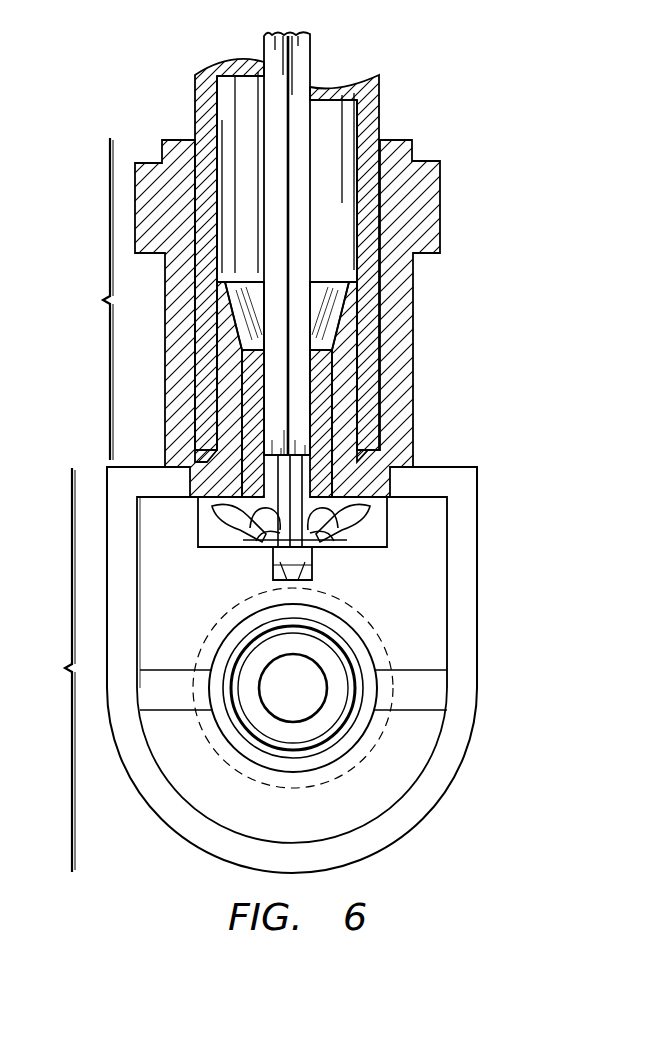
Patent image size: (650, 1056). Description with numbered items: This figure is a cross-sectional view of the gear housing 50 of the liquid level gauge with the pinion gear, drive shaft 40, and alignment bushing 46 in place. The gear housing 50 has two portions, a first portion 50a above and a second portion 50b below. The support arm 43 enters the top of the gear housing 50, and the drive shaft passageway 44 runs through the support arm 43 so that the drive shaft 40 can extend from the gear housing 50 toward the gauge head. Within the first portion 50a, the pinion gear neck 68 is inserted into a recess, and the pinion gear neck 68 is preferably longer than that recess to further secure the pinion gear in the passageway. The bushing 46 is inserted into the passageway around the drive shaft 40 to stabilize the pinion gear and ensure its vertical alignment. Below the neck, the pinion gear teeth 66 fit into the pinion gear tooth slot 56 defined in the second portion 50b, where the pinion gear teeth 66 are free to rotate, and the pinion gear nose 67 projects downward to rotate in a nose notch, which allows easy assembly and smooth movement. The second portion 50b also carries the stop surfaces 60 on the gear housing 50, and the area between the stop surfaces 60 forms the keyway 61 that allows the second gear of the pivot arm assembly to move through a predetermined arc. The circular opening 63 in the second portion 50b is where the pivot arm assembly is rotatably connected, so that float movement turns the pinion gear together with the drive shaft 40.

The drive shaft 40 is at (263, 43).
The drive shaft passageway 44 is at (325, 105).
The support arm 43 is at (382, 106).
The gear housing 50 is at (472, 121).
The first portion 50a is at (85, 299).
The second portion 50b is at (247, 670).
The bushing 46 is at (328, 281).
The pinion gear neck 68 is at (327, 423).
The pinion gear teeth 66 is at (373, 510).
The pinion gear tooth slot 56 is at (201, 538).
The pinion gear nose 67 is at (271, 554).
The keyway 61 is at (186, 642).
The stop surfaces 60 is at (420, 690).
The bearing bore 63 is at (307, 703).